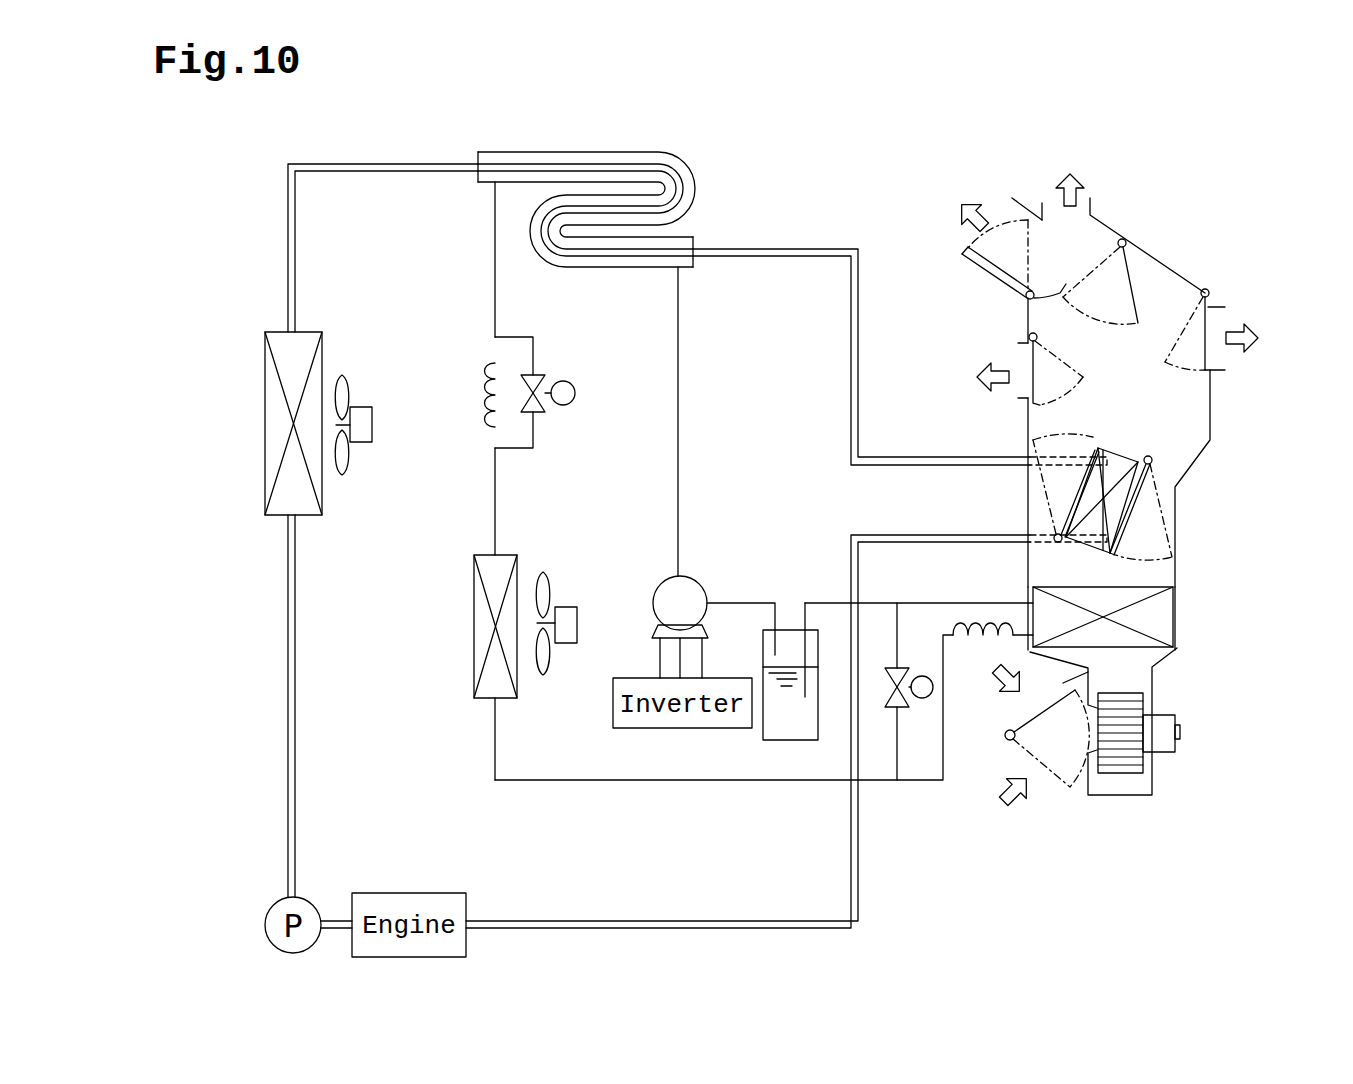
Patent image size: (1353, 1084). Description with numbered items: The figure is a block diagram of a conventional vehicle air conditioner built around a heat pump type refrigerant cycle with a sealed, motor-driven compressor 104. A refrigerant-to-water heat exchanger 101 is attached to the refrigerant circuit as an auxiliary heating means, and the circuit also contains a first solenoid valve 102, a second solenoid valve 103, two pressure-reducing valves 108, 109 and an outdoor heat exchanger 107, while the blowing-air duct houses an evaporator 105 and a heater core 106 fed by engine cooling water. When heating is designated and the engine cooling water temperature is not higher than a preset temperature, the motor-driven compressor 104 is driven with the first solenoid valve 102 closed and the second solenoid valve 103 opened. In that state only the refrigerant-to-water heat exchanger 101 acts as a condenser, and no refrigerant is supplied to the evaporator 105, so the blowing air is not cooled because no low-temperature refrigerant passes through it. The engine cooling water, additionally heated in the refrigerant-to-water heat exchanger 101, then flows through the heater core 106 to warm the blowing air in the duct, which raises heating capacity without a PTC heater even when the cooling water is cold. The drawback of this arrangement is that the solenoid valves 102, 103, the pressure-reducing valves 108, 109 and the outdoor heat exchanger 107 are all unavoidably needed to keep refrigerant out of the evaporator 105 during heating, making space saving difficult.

The refrigerant-to-water heat exchanger 101 is at (652, 151).
The first solenoid valve 102 is at (536, 373).
The second solenoid valve 103 is at (903, 708).
The motor-driven compressor 104 is at (703, 586).
The evaporator 105 is at (1168, 612).
The heater core 106 is at (1117, 520).
The outdoor heat exchanger 107 is at (483, 626).
The pressure-reducing valve 108 is at (447, 395).
The pressure-reducing valve 109 is at (985, 647).